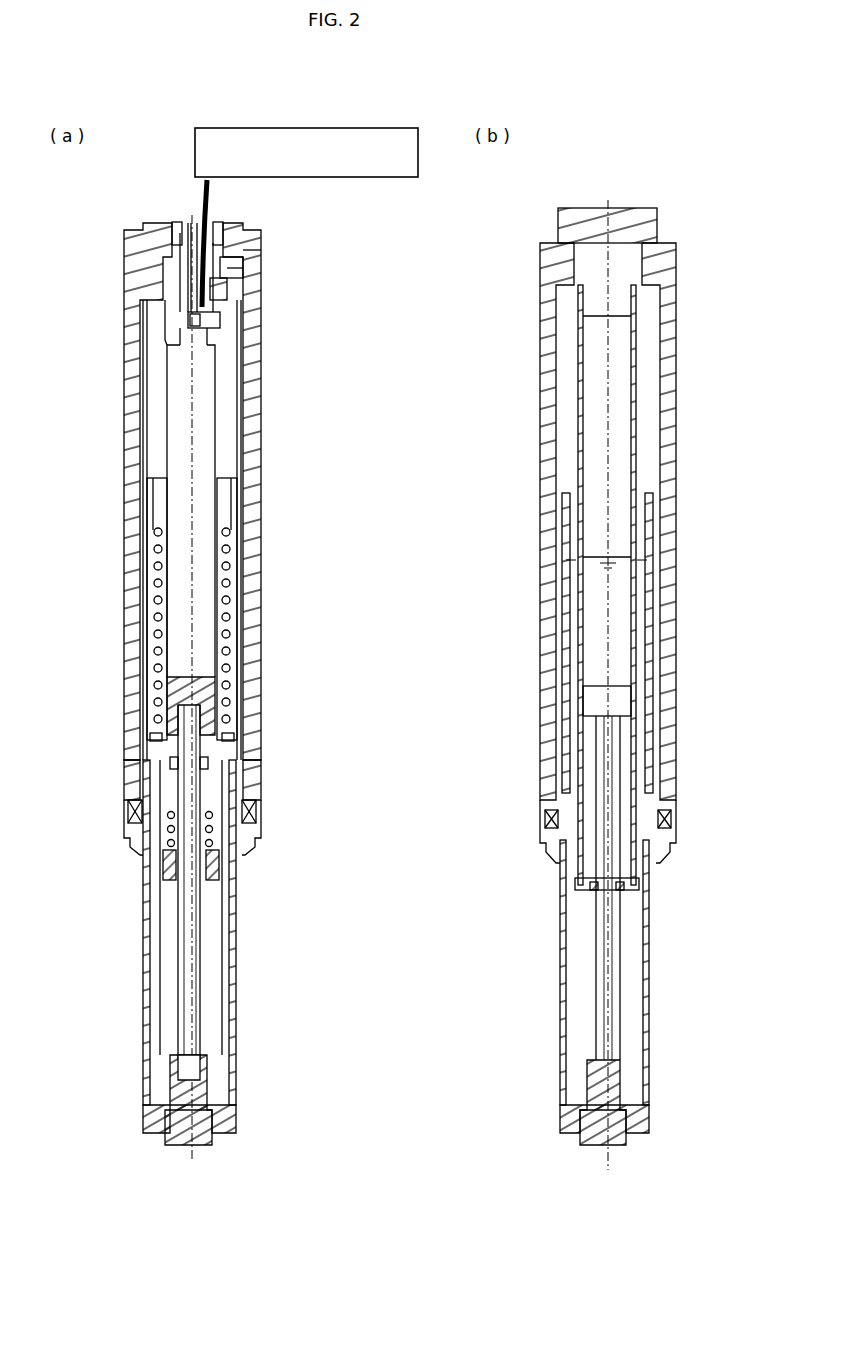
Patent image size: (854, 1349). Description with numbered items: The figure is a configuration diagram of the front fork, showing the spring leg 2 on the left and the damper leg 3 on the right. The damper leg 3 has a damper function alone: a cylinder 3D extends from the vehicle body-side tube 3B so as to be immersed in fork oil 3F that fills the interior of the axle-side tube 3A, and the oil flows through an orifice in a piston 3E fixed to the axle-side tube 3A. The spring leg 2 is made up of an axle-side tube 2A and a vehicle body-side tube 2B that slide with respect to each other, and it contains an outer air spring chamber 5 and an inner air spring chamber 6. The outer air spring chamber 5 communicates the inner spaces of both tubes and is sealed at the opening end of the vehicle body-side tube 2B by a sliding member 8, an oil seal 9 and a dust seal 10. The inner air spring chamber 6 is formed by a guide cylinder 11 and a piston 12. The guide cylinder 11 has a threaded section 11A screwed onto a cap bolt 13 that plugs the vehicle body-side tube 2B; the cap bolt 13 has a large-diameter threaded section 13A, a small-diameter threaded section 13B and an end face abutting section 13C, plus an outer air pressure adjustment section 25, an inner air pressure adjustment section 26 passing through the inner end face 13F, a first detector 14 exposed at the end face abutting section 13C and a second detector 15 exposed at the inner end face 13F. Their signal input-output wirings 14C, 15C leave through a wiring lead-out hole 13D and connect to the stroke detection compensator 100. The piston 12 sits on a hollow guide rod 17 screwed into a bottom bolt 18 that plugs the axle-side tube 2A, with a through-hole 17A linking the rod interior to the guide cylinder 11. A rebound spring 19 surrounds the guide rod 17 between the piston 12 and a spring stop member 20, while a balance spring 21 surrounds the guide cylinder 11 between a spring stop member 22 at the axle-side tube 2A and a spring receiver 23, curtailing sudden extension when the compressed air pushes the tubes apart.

The spring leg 2 is at (84, 192).
The axle-side tube 2A is at (143, 926).
The vehicle body-side tube 2B is at (132, 712).
The damper leg 3 is at (514, 344).
The axle-side tube 3A is at (559, 930).
The vehicle body-side tube 3B is at (546, 713).
The cylinder 3D is at (670, 452).
The piston 3E is at (620, 696).
The fork oil 3F is at (612, 557).
The outer air spring chamber 5 is at (225, 956).
The inner air spring chamber 6 is at (205, 612).
The sliding member 8 is at (245, 776).
The oil seal 9 is at (257, 812).
The dust seal 10 is at (250, 846).
The guide cylinder 11 is at (215, 735).
The threaded section 11A is at (208, 337).
The piston 12 is at (218, 695).
The cap bolt 13 is at (238, 232).
The large-diameter threaded section 13A is at (256, 248).
The small-diameter threaded section 13B is at (220, 316).
The end face abutting section 13C is at (225, 268).
The wiring lead-out hole 13D is at (188, 222).
The inner end face 13F is at (165, 312).
The first detector 14 is at (225, 290).
The signal input-output wiring 14C is at (206, 215).
The second detector 15 is at (208, 325).
The signal input-output wiring 15C is at (191, 222).
The guide rod 17 is at (225, 915).
The through-hole 17A is at (172, 762).
The bottom bolt 18 is at (200, 1145).
The rebound spring 19 is at (165, 850).
The spring stop member 20 is at (163, 884).
The balance spring 21 is at (158, 598).
The spring stop member 22 is at (147, 480).
The spring receiver 23 is at (152, 737).
The outer air pressure adjustment section 25 is at (220, 226).
The inner air pressure adjustment section 26 is at (172, 228).
The stroke detection compensator 100 is at (306, 152).